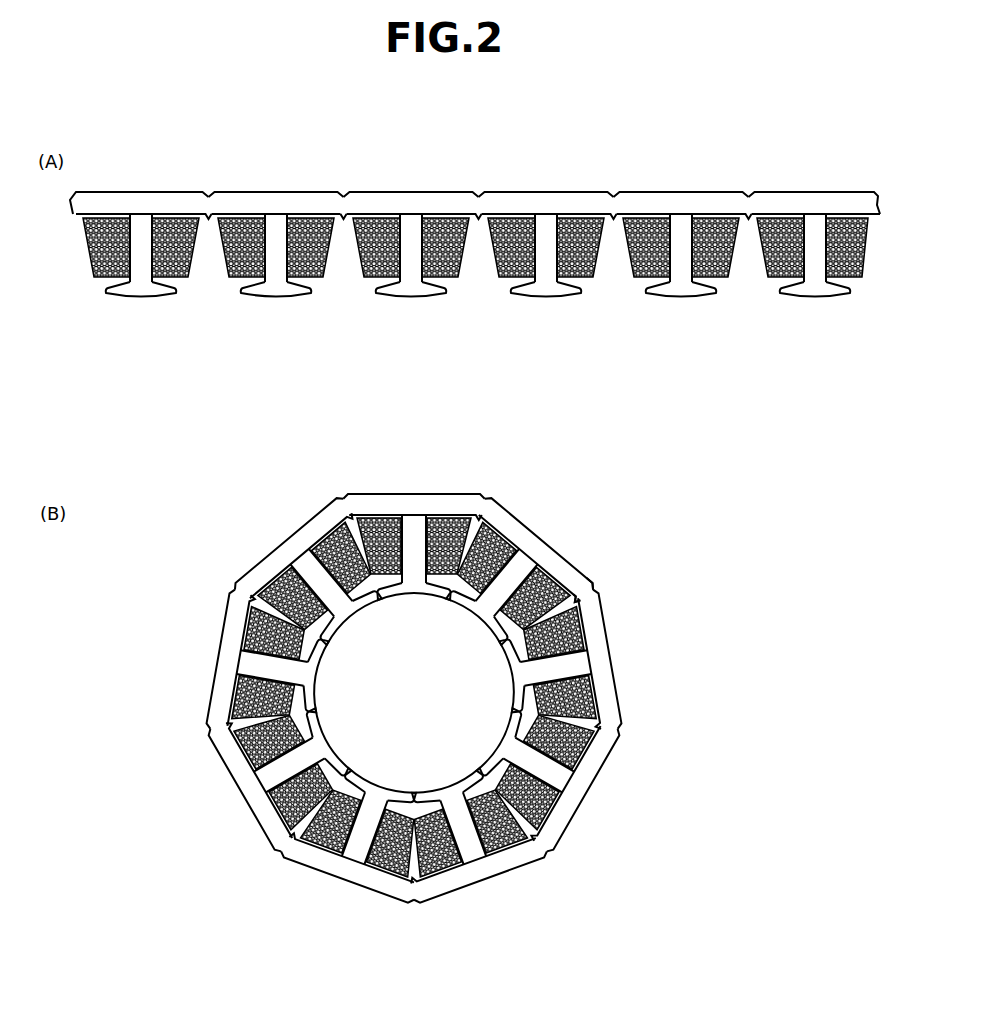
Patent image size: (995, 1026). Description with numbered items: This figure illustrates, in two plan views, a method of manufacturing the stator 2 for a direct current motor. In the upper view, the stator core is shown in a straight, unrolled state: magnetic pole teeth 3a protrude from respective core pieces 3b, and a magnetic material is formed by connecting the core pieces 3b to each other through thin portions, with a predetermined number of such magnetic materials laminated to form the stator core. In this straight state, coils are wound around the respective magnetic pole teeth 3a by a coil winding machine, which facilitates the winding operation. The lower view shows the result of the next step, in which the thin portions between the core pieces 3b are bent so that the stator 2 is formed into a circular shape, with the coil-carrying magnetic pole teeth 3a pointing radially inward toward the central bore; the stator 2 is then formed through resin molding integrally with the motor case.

The stator 2 is at (448, 661).
The magnetic pole teeth 3a is at (147, 291).
The core pieces 3b is at (137, 197).